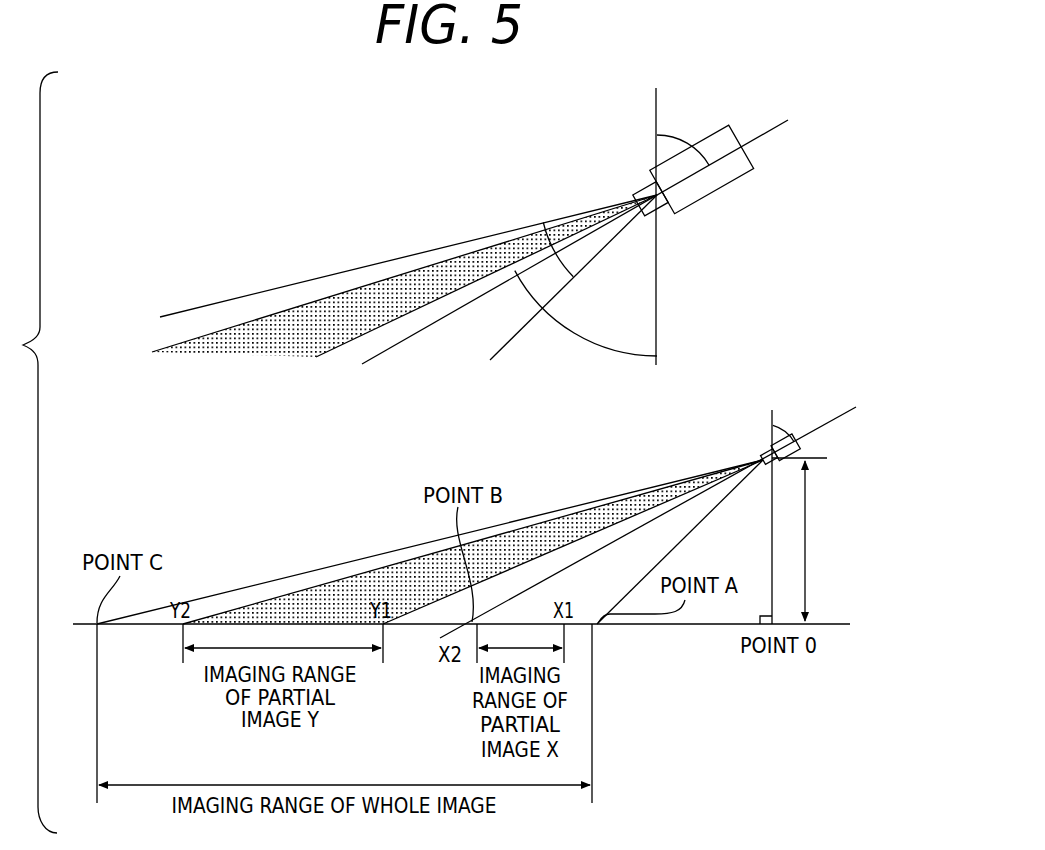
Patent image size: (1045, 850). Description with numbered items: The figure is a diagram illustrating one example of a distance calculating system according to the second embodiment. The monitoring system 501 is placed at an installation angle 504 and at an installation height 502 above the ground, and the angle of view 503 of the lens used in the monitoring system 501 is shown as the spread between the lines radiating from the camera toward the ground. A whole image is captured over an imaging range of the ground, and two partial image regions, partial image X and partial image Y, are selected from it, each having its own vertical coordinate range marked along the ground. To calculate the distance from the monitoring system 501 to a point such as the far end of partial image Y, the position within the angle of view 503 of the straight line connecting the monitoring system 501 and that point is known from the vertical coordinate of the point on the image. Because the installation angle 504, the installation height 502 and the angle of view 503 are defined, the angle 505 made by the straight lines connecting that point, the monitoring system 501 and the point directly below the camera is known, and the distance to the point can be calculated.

The monitoring system 501 is at (792, 435).
The installation height 502 is at (828, 541).
The angle of view 503 is at (556, 255).
The installation angle 504 is at (692, 137).
The angle 505 is at (568, 330).